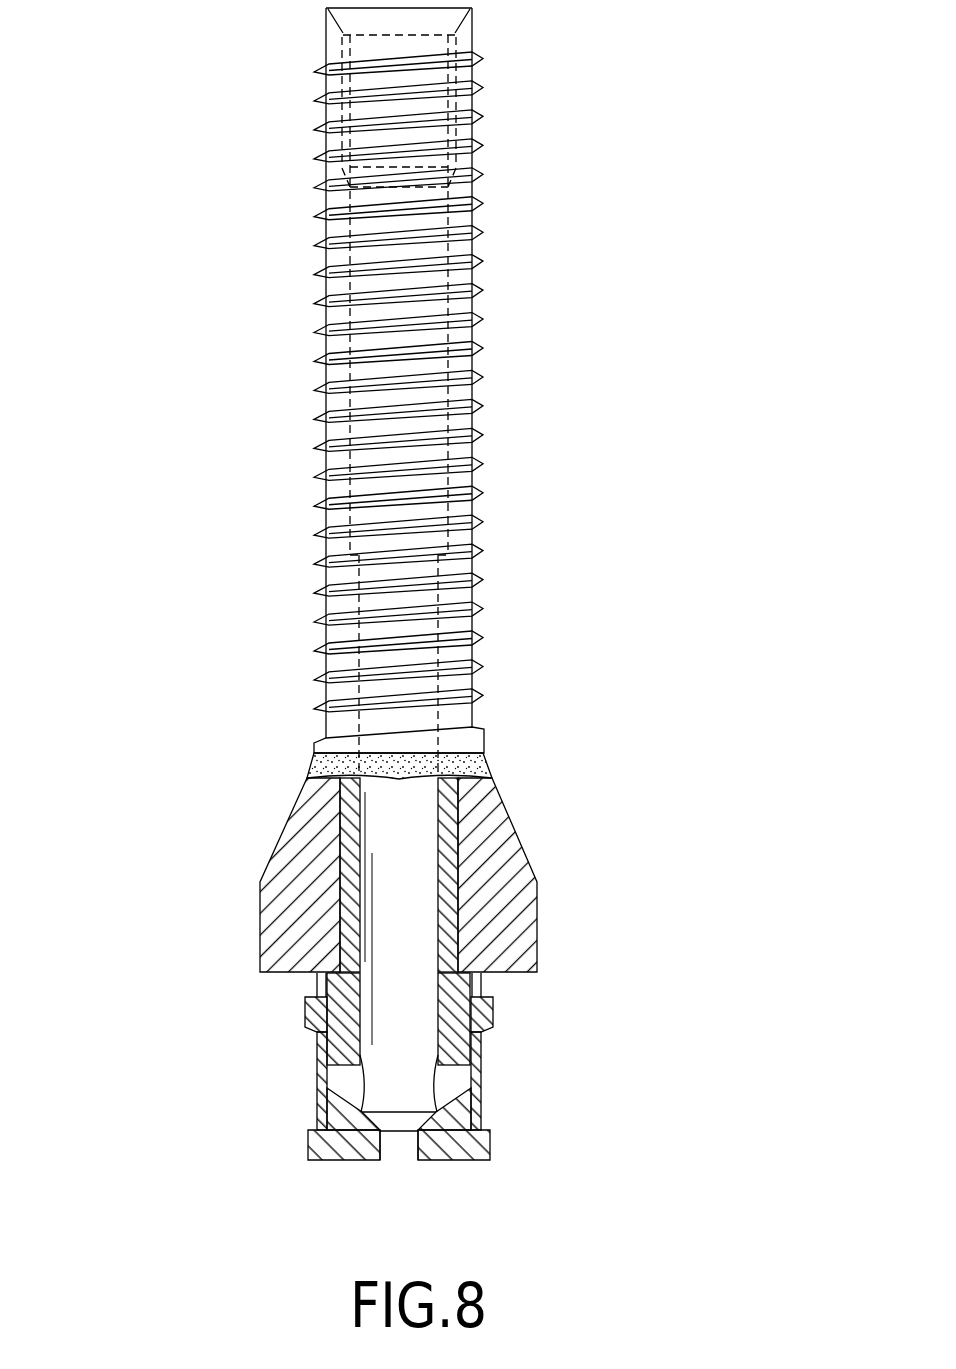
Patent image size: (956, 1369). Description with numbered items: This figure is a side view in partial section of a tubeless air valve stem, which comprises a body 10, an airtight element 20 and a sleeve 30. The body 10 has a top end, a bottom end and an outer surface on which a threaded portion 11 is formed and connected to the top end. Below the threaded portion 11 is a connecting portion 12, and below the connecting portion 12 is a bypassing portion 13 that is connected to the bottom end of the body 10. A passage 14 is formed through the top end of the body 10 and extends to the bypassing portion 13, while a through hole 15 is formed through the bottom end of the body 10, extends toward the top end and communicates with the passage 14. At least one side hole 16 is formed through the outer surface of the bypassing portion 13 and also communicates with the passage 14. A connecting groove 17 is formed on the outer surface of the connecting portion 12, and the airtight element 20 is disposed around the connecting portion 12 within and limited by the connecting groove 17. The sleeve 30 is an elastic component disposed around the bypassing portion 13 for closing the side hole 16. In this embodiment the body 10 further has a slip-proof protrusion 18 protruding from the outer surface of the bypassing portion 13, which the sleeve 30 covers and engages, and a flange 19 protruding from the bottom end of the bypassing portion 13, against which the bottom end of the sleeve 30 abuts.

The body 10 is at (516, 100).
The threaded portion 11 is at (476, 226).
The connecting portion 12 is at (245, 870).
The bypassing portion 13 is at (285, 1047).
The passage 14 is at (456, 829).
The through hole 15 is at (414, 1144).
The side hole 16 is at (445, 1062).
The connecting groove 17 is at (330, 975).
The slip-proof protrusion 18 is at (480, 1012).
The flange 19 is at (315, 1143).
The airtight element 20 is at (510, 880).
The sleeve 30 is at (323, 1090).